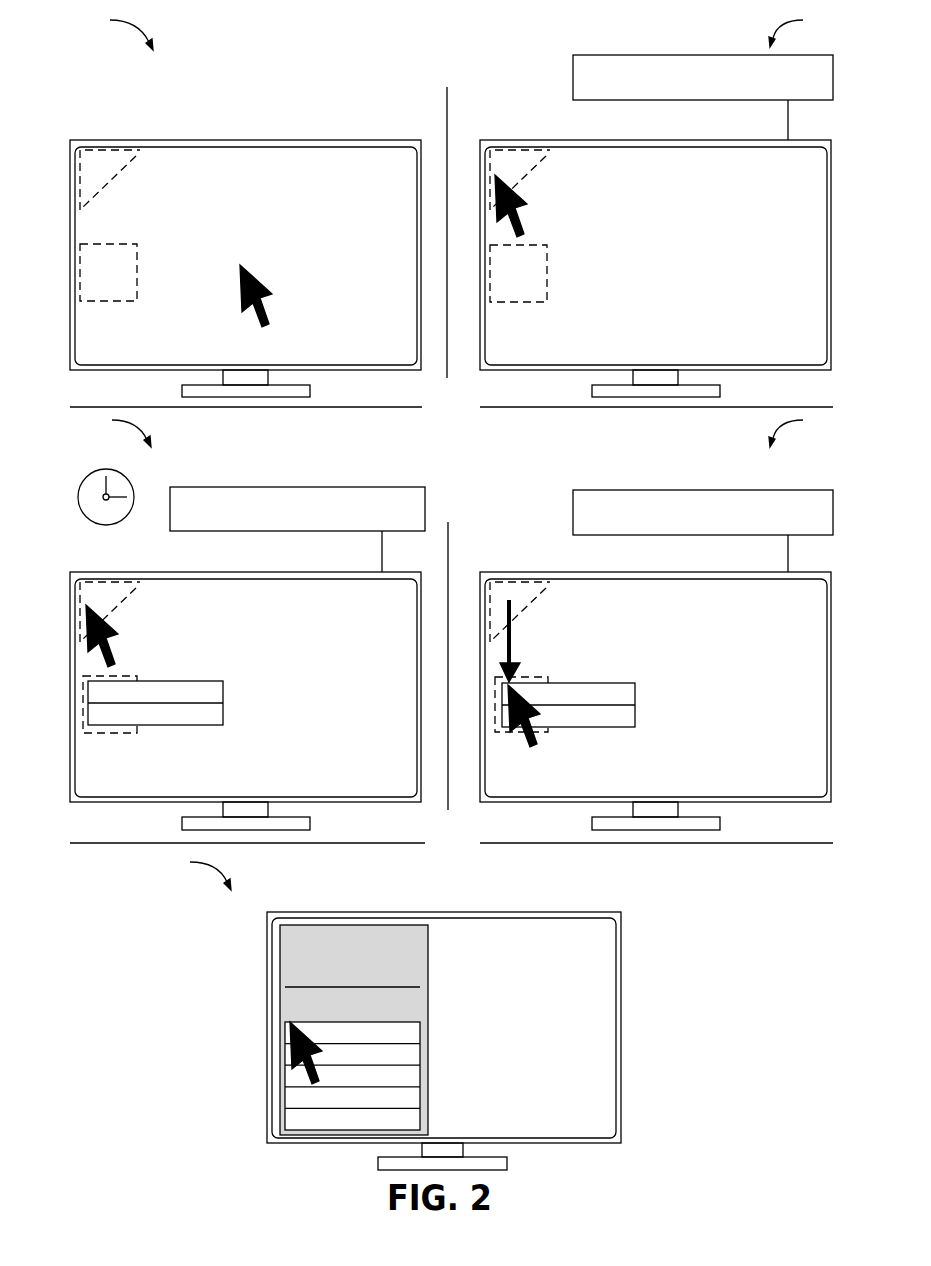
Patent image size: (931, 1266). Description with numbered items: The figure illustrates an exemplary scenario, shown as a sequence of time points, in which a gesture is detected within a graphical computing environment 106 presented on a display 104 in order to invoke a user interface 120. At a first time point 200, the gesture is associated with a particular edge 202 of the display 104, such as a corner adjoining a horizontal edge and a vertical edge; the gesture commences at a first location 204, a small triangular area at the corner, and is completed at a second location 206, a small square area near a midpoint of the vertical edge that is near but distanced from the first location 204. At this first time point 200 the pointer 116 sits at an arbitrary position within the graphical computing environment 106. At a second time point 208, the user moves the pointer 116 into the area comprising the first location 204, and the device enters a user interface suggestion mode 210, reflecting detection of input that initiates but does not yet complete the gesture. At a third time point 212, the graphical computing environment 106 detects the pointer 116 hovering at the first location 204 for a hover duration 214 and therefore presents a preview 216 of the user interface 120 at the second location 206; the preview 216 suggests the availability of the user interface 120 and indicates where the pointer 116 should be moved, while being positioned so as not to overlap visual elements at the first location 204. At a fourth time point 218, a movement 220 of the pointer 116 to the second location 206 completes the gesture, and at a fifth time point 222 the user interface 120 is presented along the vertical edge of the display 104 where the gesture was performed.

The display 104 is at (290, 140).
The graphical computing environment 106 is at (357, 147).
The pointer 116 is at (247, 273).
The user interface 120 is at (428, 960).
The first time point 200 is at (114, 29).
The edge 202 is at (82, 142).
The first location 204 is at (118, 158).
The second location 206 is at (137, 264).
The second time point 208 is at (806, 27).
The user interface suggestion mode 210 is at (635, 55).
The third time point 212 is at (112, 430).
The hover duration 214 is at (127, 482).
The preview 216 is at (223, 700).
The fourth time point 218 is at (806, 428).
The movement 220 is at (516, 622).
The fifth time point 222 is at (191, 870).